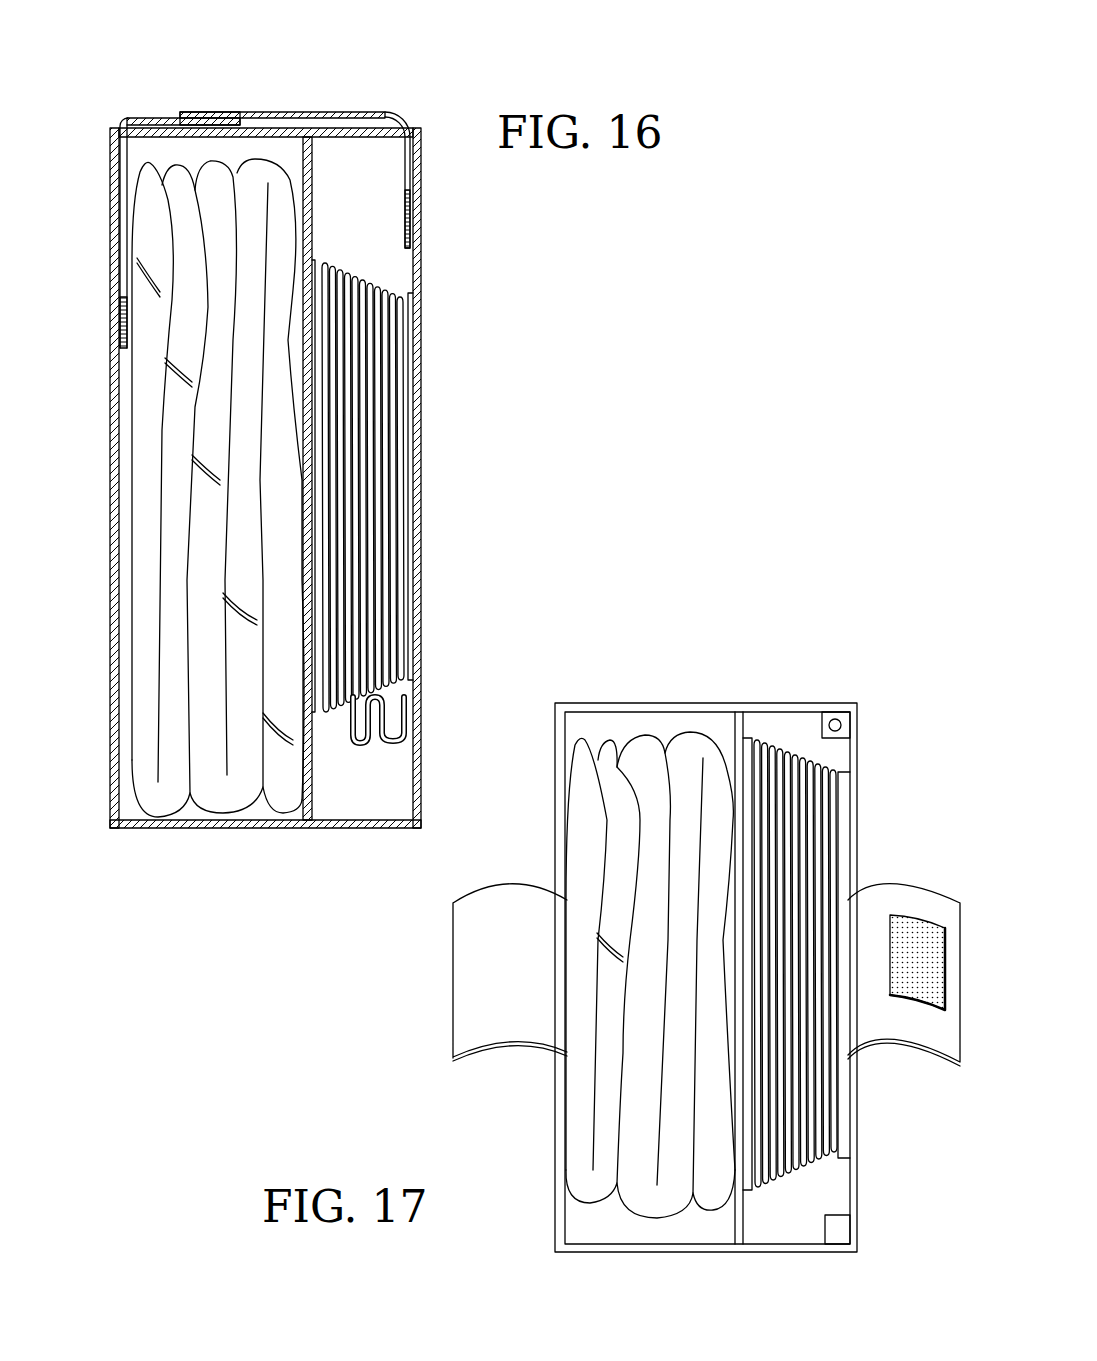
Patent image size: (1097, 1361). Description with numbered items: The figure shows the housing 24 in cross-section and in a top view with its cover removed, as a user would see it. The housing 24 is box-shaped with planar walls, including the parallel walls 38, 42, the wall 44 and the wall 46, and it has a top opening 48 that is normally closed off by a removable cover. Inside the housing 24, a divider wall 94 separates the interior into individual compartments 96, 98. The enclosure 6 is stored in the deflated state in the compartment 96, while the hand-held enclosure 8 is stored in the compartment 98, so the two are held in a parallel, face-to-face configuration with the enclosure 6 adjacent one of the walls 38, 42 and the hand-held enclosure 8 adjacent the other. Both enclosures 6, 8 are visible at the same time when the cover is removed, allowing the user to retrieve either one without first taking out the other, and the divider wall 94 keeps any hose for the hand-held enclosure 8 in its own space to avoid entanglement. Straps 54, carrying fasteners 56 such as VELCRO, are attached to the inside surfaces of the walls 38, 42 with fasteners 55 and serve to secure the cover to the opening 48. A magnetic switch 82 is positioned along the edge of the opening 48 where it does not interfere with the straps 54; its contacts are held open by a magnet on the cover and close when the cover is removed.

In FIG. 16, the enclosure 6 is at (174, 422).
In FIG. 17, the enclosure 6 is at (600, 1113).
In FIG. 16, the hand-held enclosure 8 is at (378, 402).
In FIG. 17, the hand-held enclosure 8 is at (795, 963).
In FIG. 16, the housing 24 is at (268, 524).
In FIG. 17, the housing 24 is at (706, 976).
In FIG. 16, the wall 38 is at (112, 608).
In FIG. 16, the wall 42 is at (422, 540).
In FIG. 16, the wall 44 is at (367, 786).
In FIG. 16, the wall 46 is at (146, 828).
In FIG. 16, the top opening 48 is at (205, 150).
In FIG. 16, the strap 54 is at (133, 118).
In FIG. 17, the strap 54 is at (898, 897).
In FIG. 16, the fastener 55 is at (120, 320).
In FIG. 17, the fastener 56 is at (505, 1015).
In FIG. 17, the magnetic switch 82 is at (840, 1232).
In FIG. 16, the divider wall 94 is at (315, 165).
In FIG. 17, the divider wall 94 is at (746, 1218).
In FIG. 16, the compartment 96 is at (290, 150).
In FIG. 17, the compartment 96 is at (690, 718).
In FIG. 16, the compartment 98 is at (372, 253).
In FIG. 17, the compartment 98 is at (795, 722).